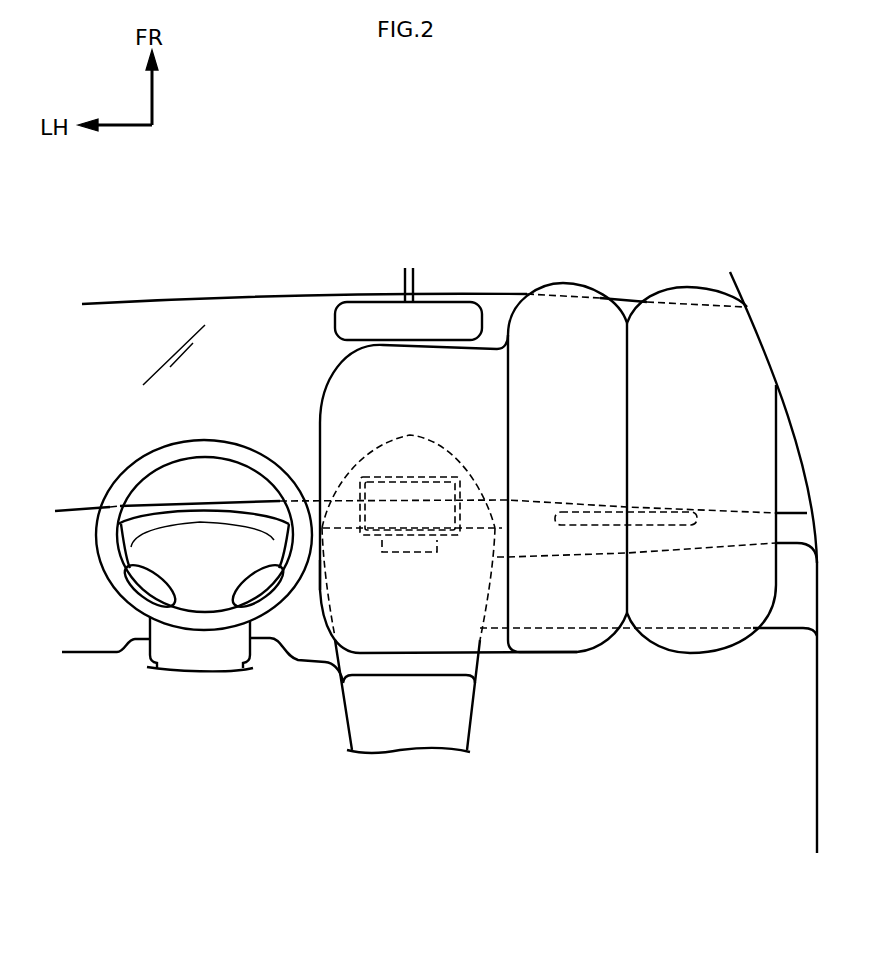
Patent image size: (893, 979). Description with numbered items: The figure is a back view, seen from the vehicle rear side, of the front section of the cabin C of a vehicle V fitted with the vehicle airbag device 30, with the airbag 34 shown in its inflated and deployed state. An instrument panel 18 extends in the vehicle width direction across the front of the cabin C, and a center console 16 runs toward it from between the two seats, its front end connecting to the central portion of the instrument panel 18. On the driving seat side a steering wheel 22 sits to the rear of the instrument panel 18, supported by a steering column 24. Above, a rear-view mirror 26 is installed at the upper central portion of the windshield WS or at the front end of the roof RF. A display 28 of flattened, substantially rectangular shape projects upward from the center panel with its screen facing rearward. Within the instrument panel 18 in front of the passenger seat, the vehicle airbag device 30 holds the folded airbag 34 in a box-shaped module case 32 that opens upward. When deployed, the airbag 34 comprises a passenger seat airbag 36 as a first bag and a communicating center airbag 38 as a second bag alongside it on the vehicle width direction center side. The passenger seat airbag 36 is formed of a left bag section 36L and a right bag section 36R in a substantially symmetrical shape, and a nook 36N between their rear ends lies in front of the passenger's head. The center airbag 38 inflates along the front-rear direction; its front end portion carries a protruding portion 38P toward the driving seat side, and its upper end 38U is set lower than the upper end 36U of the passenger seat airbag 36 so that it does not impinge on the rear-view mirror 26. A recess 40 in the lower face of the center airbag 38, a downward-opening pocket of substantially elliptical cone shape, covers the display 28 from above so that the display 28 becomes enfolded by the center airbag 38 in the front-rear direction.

The center console 16 is at (403, 671).
The instrument panel 18 is at (77, 510).
The steering wheel 22 is at (140, 460).
The steering column 24 is at (147, 647).
The rear-view mirror 26 is at (338, 318).
The display 28 is at (353, 490).
The vehicle airbag device 30 is at (504, 484).
The module case 32 is at (652, 510).
The airbag 34 is at (504, 503).
The passenger seat airbag 36 is at (628, 484).
The left bag section 36L is at (567, 640).
The right bag section 36R is at (693, 640).
The upper end of passenger seat airbag 36U is at (567, 283).
The nook 36N is at (628, 362).
The center airbag 38 is at (404, 552).
The upper end of center airbag 38U is at (347, 348).
The protruding portion 38P is at (320, 610).
The recess 40 is at (392, 447).
The cabin C is at (87, 583).
The vehicle V is at (708, 142).
The windshield WS is at (127, 322).
The roof RF is at (245, 282).